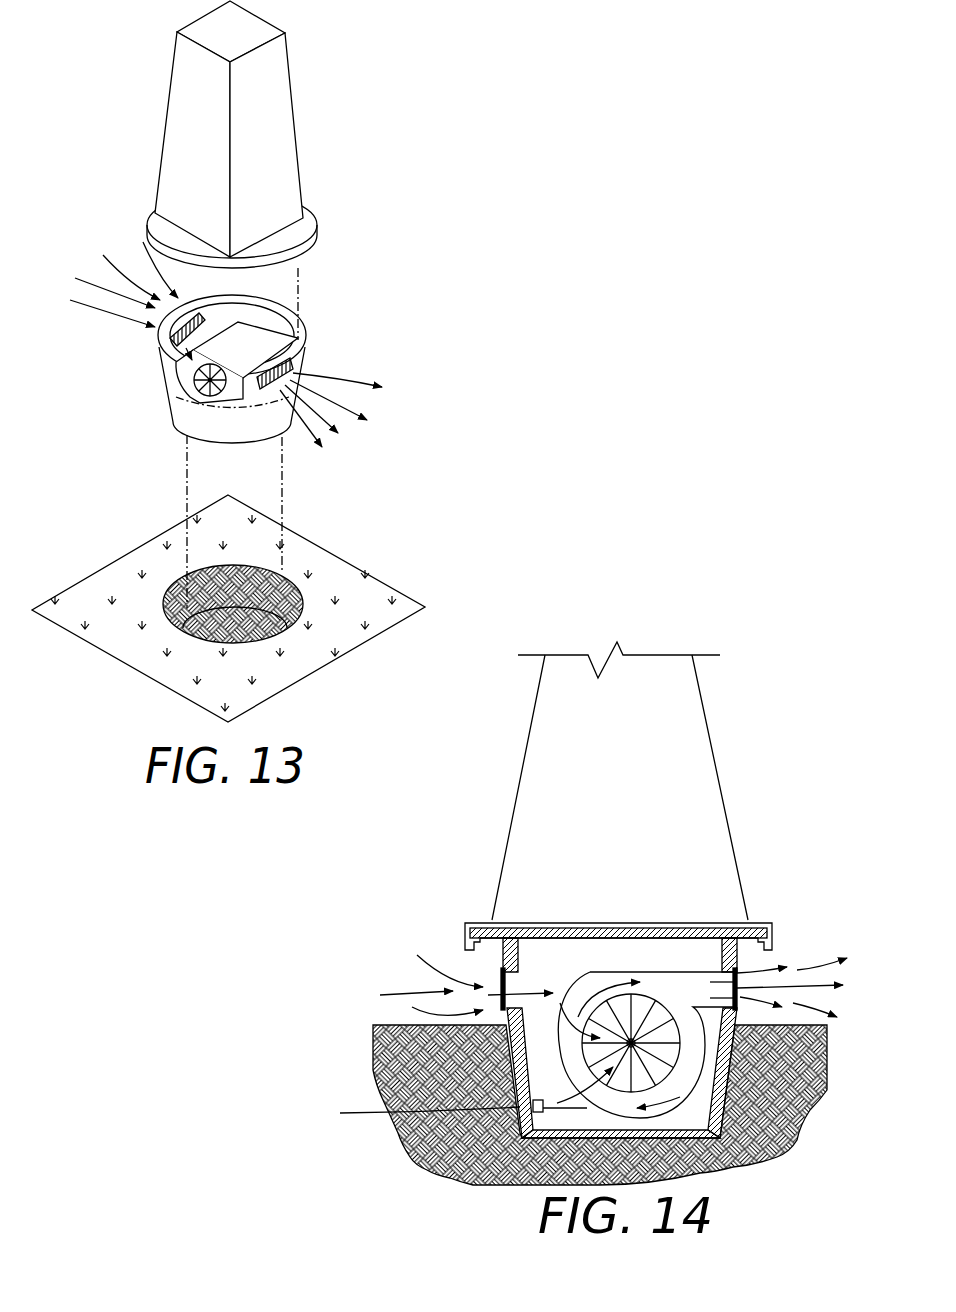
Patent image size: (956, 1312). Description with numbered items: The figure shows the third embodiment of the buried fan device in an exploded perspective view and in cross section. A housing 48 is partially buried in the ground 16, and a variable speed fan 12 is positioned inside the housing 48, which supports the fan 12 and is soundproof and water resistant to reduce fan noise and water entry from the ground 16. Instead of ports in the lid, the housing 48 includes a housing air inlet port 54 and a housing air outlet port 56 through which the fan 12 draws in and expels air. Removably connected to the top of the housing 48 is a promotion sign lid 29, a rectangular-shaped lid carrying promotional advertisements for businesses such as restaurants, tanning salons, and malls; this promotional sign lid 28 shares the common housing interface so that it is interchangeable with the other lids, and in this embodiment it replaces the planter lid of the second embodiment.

In FIG. 13, the variable speed fan 12 is at (270, 330).
In FIG. 14, the variable speed fan 12 is at (705, 1100).
In FIG. 13, the ground 16 is at (312, 542).
In FIG. 14, the ground 16 is at (825, 1062).
In FIG. 14, the promotional sign lid 28 is at (723, 795).
In FIG. 13, the promotion sign lid 29 is at (300, 113).
In FIG. 13, the housing 48 is at (175, 405).
In FIG. 14, the housing 48 is at (773, 960).
In FIG. 13, the housing air inlet port 54 is at (172, 338).
In FIG. 14, the housing air inlet port 54 is at (500, 975).
In FIG. 13, the housing air outlet port 56 is at (268, 392).
In FIG. 14, the housing air outlet port 56 is at (745, 988).